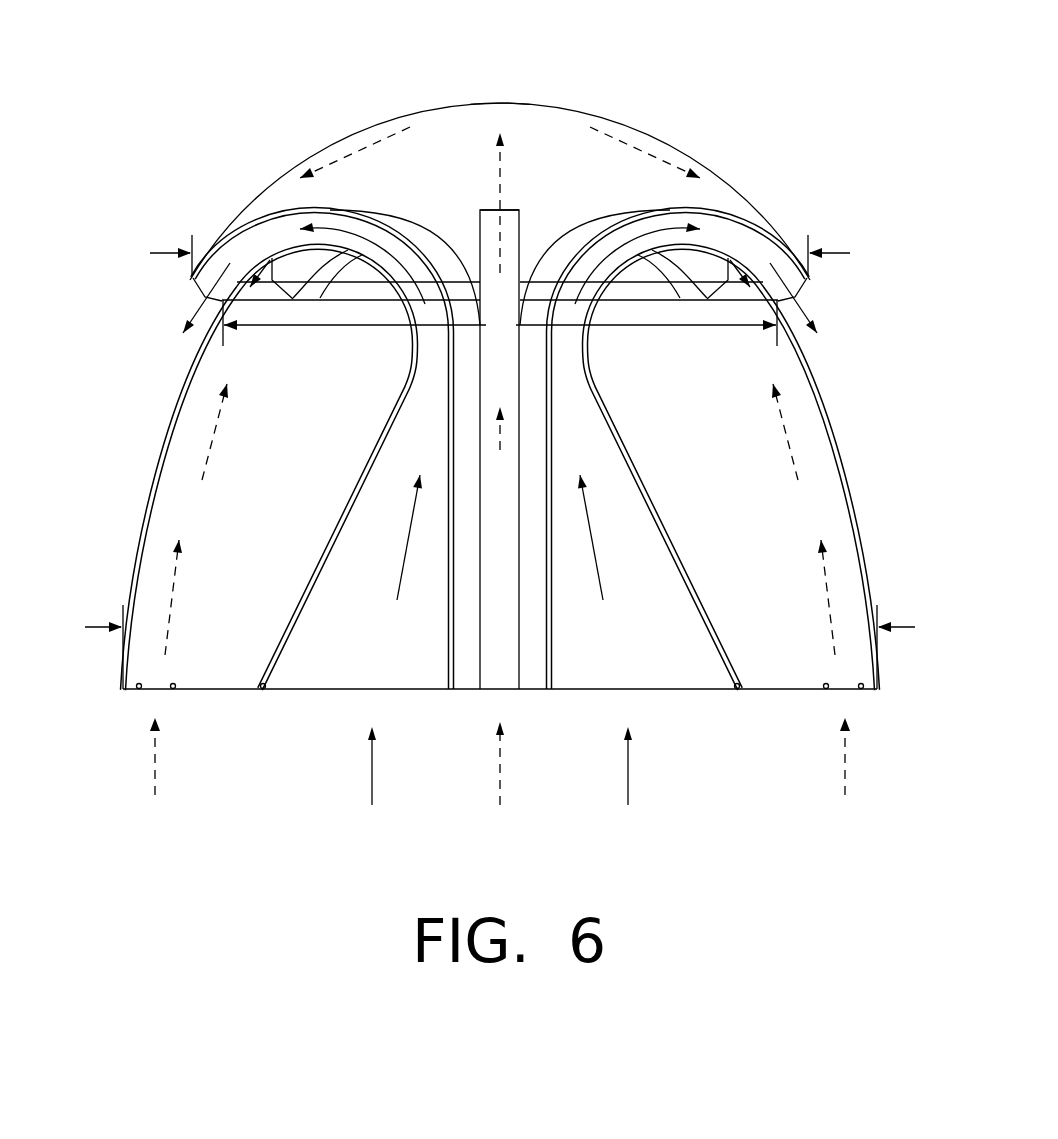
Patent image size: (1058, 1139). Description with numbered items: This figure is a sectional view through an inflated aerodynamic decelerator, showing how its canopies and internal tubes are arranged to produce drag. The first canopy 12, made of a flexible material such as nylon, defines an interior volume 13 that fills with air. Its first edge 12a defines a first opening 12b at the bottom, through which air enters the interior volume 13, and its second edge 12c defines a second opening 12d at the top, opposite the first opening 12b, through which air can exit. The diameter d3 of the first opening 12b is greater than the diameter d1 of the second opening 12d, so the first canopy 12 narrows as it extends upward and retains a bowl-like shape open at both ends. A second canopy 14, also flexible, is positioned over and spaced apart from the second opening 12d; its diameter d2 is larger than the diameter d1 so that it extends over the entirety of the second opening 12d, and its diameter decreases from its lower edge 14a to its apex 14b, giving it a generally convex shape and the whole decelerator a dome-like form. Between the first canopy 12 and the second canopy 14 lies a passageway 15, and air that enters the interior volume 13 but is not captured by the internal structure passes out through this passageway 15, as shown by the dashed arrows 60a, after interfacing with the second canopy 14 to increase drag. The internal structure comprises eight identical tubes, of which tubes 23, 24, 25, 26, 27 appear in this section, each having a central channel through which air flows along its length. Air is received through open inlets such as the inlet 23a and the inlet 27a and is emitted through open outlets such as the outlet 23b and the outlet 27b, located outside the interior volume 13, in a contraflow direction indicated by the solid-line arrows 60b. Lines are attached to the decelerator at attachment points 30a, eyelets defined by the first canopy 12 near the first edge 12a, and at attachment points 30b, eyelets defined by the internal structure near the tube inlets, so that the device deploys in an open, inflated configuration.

The first canopy 12 is at (130, 568).
The first edge 12a is at (150, 692).
The first opening 12b is at (508, 695).
The second edge 12c is at (740, 302).
The second opening 12d is at (260, 303).
The interior volume 13 is at (836, 468).
The second canopy 14 is at (540, 123).
The lower edge 14a is at (625, 283).
The apex 14b is at (500, 102).
The passageway 15 is at (350, 299).
The tube 23 is at (273, 230).
The inlet 23a is at (388, 662).
The outlet 23b is at (232, 233).
The tube 24 is at (413, 210).
The tube 25 is at (510, 210).
The tube 26 is at (590, 210).
The tube 27 is at (737, 240).
The inlet 27a is at (657, 683).
The outlet 27b is at (768, 235).
The attachment points 30a is at (123, 689).
The attachment points 30b is at (263, 689).
The air 60a is at (228, 257).
The air 60b is at (200, 300).
The diameter of the second opening d1 is at (500, 323).
The diameter of the second canopy d2 is at (505, 255).
The diameter of the first opening d3 is at (504, 647).